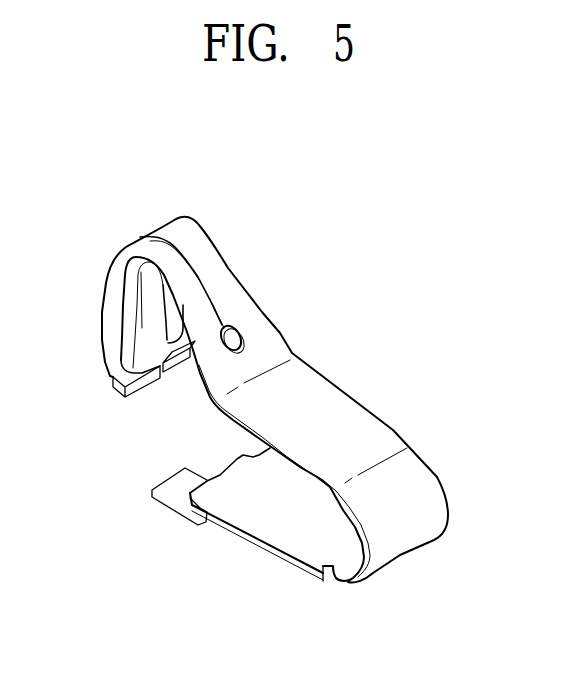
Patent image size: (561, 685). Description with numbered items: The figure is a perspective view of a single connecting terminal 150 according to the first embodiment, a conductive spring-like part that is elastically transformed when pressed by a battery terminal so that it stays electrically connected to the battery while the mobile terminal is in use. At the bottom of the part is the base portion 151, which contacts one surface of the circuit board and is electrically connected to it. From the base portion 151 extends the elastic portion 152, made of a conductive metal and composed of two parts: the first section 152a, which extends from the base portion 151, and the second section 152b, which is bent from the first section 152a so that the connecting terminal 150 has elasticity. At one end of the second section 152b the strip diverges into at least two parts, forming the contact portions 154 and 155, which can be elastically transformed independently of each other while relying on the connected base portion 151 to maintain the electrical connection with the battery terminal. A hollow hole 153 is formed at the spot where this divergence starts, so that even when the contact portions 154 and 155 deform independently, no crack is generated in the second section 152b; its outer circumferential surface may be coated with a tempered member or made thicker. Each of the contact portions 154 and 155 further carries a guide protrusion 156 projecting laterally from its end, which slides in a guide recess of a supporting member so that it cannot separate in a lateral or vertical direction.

The connecting terminal 150 is at (398, 306).
The base portion 151 is at (177, 495).
The elastic portion 152 is at (250, 545).
The first section 152a is at (248, 513).
The second section 152b is at (327, 470).
The hollow hole 153 is at (240, 327).
The contact portion 154 is at (143, 243).
The contact portion 155 is at (170, 222).
The guide protrusion 156 is at (112, 380).